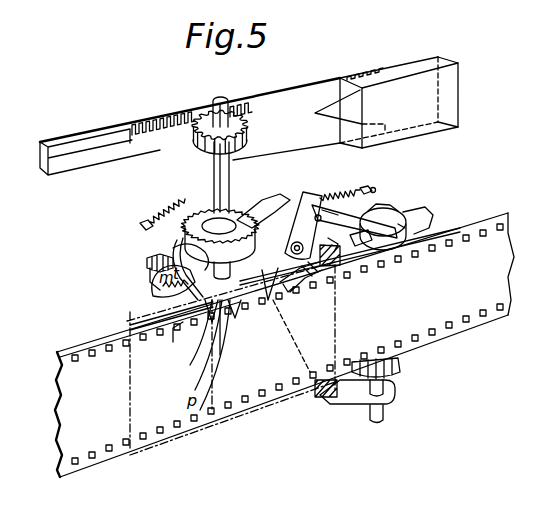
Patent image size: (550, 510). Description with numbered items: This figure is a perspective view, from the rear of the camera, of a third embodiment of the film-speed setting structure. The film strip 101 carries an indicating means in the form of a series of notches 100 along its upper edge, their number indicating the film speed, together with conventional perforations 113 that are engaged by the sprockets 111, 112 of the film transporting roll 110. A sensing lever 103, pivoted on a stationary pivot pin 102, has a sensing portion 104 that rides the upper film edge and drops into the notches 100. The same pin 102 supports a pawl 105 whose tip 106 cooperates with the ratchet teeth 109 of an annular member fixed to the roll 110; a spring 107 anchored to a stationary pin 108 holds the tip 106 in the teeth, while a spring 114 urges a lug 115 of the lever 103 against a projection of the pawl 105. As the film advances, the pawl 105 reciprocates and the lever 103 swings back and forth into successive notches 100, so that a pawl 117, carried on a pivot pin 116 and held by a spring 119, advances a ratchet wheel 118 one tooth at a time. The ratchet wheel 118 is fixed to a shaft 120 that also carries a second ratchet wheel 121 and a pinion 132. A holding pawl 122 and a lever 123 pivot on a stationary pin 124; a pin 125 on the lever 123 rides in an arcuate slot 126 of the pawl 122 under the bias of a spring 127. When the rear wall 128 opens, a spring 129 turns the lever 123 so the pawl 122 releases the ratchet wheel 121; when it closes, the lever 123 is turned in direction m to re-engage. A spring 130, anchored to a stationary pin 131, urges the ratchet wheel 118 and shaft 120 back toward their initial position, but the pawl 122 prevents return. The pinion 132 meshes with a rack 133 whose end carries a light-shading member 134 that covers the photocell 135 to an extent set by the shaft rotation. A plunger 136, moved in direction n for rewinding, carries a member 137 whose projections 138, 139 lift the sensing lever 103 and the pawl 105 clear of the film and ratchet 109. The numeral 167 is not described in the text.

The notches 100 is at (248, 297).
The film strip 101 is at (258, 390).
The stationary pivot pin 102 is at (342, 250).
The sensing lever 103 is at (285, 280).
The sensing portion 104 is at (212, 340).
The pawl 105 is at (360, 237).
The tip 106 is at (427, 220).
The spring 107 is at (343, 193).
The stationary pin 108 is at (375, 189).
The ratchet teeth 109 is at (390, 218).
The film transporting roll 110 is at (400, 363).
The sprocket 111 is at (400, 228).
The sprocket 112 is at (398, 372).
The perforations 113 is at (503, 309).
The spring 114 is at (320, 200).
The lug 115 is at (333, 215).
The pivot pin 116 is at (295, 232).
The pawl 117 is at (237, 220).
The ratchet wheel 118 is at (235, 192).
The spring 119 is at (315, 267).
The shaft 120 is at (217, 165).
The second ratchet wheel 121 is at (187, 393).
The pawl 122 is at (177, 240).
The lever 123 is at (160, 293).
The pivot pin 124 is at (193, 350).
The pin 125 is at (157, 270).
The arcuate slot 126 is at (173, 248).
The spring 127 is at (173, 342).
The rear wall 128 is at (167, 443).
The spring 129 is at (147, 273).
The spring 130 is at (185, 197).
The stationary pin 131 is at (140, 224).
The pinion 132 is at (202, 118).
The rack 133 is at (147, 118).
The light-shading member 134 is at (293, 98).
The photocell 135 is at (415, 67).
The plunger 136 is at (385, 417).
The member 137 is at (315, 402).
The projection 138 is at (263, 287).
The projection 139 is at (332, 242).
The sheet number 167 is at (500, 498).